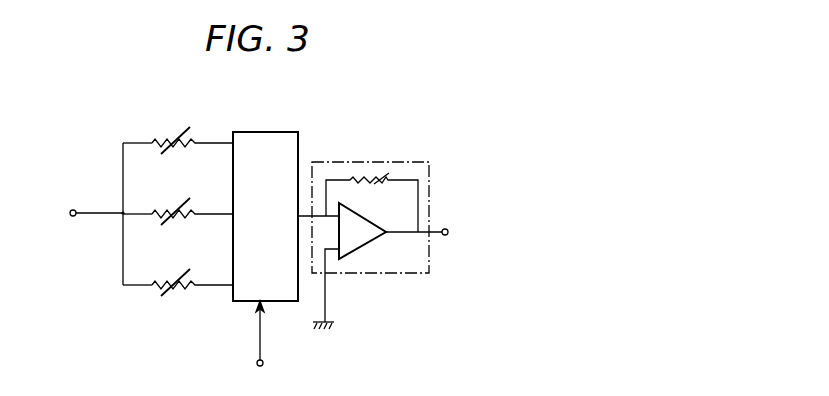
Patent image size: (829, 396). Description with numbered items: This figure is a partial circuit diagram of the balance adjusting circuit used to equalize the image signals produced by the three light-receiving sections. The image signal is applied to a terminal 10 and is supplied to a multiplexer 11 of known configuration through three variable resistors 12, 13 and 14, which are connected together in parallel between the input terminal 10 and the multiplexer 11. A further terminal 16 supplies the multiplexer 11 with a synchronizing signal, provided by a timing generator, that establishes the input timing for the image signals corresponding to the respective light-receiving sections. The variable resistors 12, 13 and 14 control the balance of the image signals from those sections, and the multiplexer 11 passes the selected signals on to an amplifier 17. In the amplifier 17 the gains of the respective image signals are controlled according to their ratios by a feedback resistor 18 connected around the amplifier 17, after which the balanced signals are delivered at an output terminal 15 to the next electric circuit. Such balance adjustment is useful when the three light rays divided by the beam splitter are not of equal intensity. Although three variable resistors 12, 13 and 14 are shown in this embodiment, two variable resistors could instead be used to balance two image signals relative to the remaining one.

The terminal 10 is at (73, 209).
The multiplexer 11 is at (248, 132).
The variable resistor 12 is at (168, 140).
The variable resistor 13 is at (167, 211).
The variable resistor 14 is at (167, 282).
The output terminal 15 is at (446, 229).
The terminal 16 is at (257, 363).
The amplifier 17 is at (358, 162).
The feedback resistor 18 is at (409, 162).